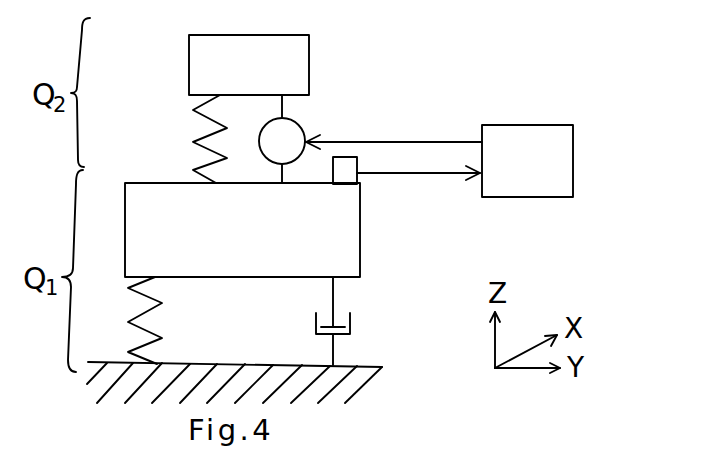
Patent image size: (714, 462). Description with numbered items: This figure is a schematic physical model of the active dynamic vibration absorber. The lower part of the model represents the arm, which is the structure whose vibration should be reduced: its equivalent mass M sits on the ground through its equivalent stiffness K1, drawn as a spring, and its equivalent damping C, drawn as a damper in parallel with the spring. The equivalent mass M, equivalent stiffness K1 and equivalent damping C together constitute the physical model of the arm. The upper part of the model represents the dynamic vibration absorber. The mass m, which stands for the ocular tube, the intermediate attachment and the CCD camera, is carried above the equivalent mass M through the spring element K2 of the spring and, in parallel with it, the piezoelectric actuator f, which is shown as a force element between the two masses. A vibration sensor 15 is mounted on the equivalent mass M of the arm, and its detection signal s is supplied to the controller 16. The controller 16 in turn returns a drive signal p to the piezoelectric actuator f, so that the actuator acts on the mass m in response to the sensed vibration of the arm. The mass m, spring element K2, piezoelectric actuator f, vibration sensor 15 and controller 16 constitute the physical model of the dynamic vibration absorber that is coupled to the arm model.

The vibration sensor 15 is at (347, 160).
The controller 16 is at (524, 134).
The mass m is at (249, 65).
The equivalent mass M is at (242, 230).
The piezoelectric actuator f is at (282, 139).
The equivalent stiffness K1 is at (127, 320).
The spring element K2 is at (192, 139).
The equivalent damping C is at (351, 321).
The sensor signal s is at (447, 142).
The control signal p is at (441, 175).